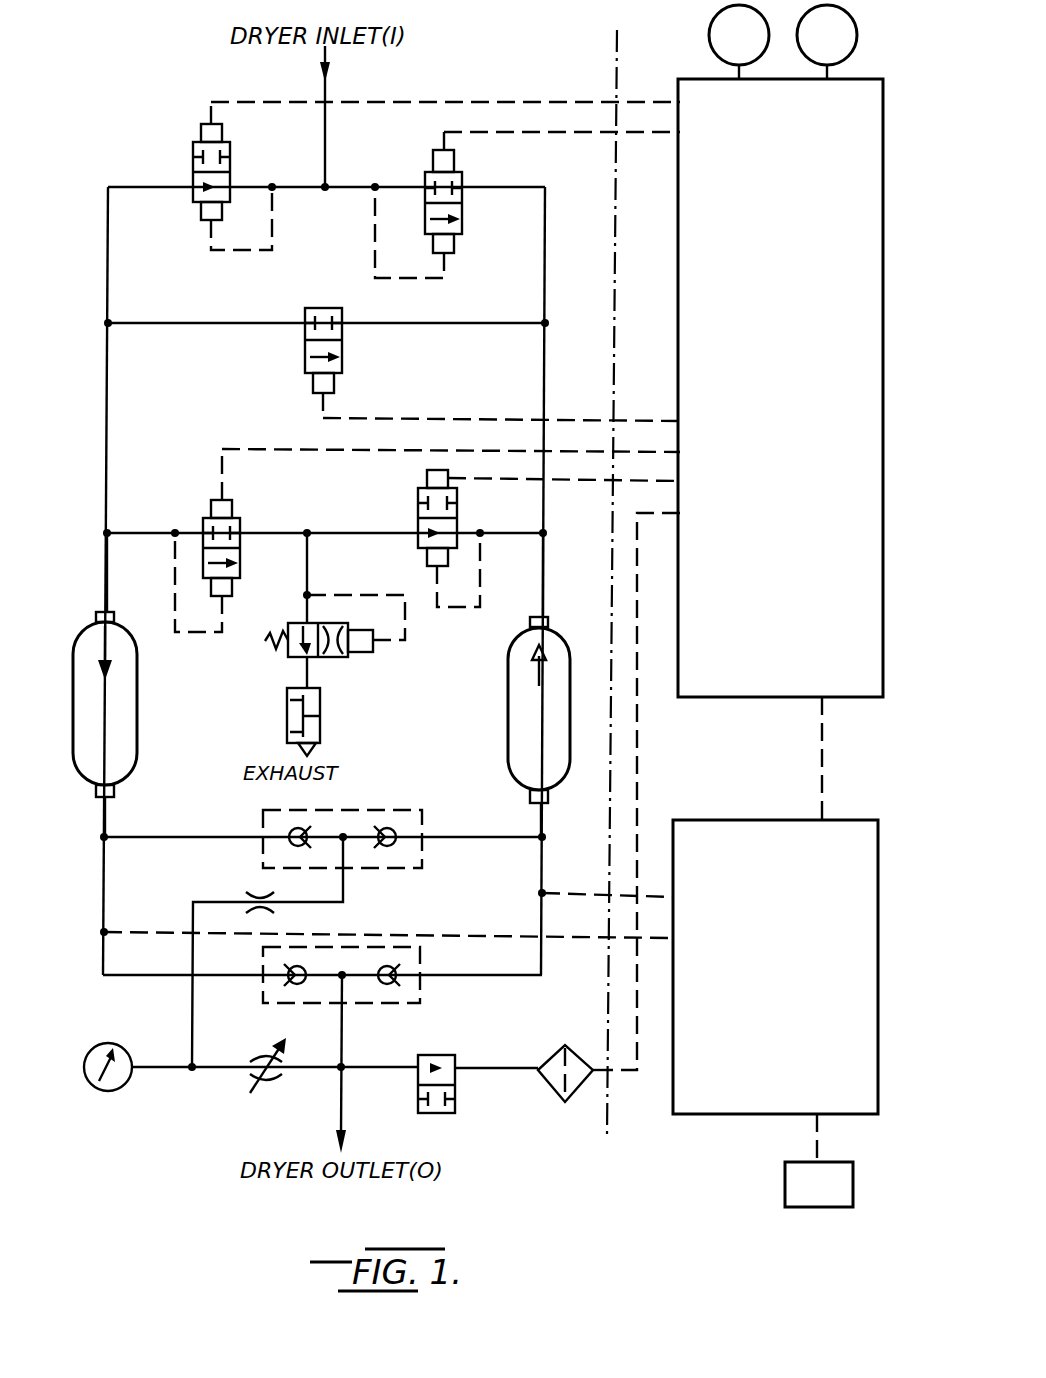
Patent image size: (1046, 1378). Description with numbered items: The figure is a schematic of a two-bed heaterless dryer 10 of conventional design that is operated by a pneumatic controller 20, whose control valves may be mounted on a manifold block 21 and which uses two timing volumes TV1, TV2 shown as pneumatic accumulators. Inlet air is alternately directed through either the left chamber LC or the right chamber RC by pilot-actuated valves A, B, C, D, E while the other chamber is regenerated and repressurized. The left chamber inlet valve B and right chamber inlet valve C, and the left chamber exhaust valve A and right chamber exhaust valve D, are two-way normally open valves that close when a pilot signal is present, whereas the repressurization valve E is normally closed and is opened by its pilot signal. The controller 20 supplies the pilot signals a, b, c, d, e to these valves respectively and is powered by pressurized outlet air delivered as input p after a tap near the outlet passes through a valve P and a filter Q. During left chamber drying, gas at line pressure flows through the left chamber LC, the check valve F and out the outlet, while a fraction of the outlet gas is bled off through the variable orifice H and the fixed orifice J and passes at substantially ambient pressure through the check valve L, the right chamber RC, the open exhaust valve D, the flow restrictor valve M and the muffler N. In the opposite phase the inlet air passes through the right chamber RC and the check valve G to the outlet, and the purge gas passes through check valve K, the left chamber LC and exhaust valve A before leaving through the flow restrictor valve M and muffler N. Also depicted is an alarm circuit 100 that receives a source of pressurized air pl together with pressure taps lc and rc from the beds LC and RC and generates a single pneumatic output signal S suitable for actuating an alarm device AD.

The two-bed heaterless dryer 10 is at (514, 56).
The pneumatic controller 20 is at (780, 388).
The manifold block 21 is at (853, 79).
The alarm circuit 100 is at (775, 967).
The timing volume TV1 is at (739, 42).
The timing volume TV2 is at (827, 42).
The left chamber exhaust valve A is at (218, 540).
The left chamber inlet valve B is at (216, 176).
The right chamber inlet valve C is at (418, 205).
The right chamber exhaust valve D is at (434, 538).
The repressurization valve E is at (308, 363).
The flow restrictor valve M is at (335, 638).
The muffler N is at (316, 722).
The left chamber LC is at (105, 685).
The right chamber RC is at (539, 685).
The check valve K is at (310, 830).
The check valve L is at (377, 830).
The fixed orifice J is at (267, 952).
The check valve F is at (302, 968).
The check valve G is at (379, 968).
The variable orifice H is at (268, 1073).
The valve P is at (423, 1084).
The filter Q is at (564, 1075).
The pneumatic signal S is at (804, 1138).
The alarm device AD is at (819, 1184).
The pilot signal b is at (445, 89).
The pilot signal c is at (562, 120).
The pilot signal e is at (501, 410).
The pilot signal a is at (451, 442).
The pilot signal d is at (564, 474).
The input p is at (643, 781).
The source of pressurized air pl is at (803, 758).
The pressure tap rc is at (607, 884).
The pressure tap lc is at (388, 926).